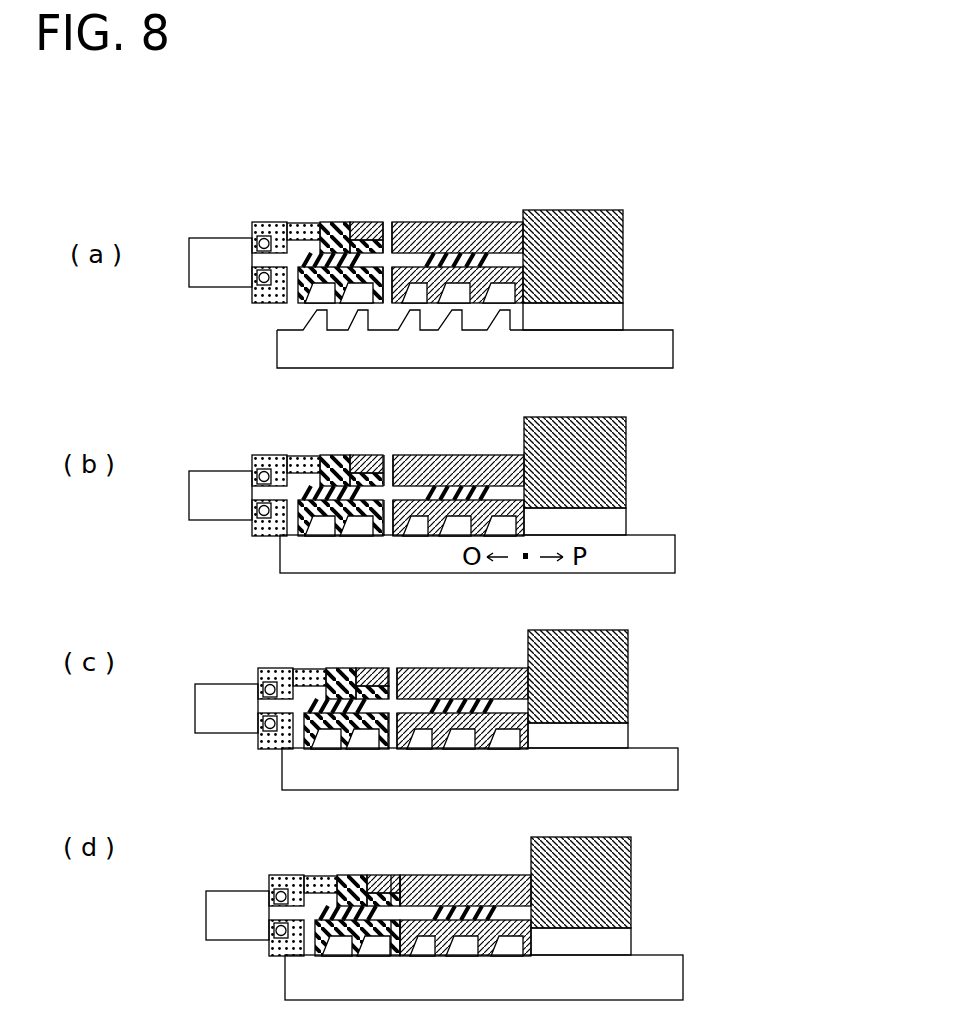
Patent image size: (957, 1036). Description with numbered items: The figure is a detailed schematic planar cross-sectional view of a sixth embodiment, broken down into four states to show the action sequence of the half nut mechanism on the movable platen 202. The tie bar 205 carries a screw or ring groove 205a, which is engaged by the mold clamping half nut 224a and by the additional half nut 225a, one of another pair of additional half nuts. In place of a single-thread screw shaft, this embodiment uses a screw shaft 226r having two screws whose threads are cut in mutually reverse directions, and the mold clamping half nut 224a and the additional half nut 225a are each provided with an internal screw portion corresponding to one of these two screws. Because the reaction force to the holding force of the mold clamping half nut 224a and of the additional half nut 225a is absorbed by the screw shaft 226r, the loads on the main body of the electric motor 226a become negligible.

The movable platen 202 is at (587, 253).
The tie bar 205 is at (479, 313).
The ring groove 205a is at (360, 320).
The mold clamping half nut 224a is at (483, 222).
The additional half nut 225a is at (338, 230).
The electric motor 226a is at (220, 262).
The screw shaft 226r is at (388, 262).